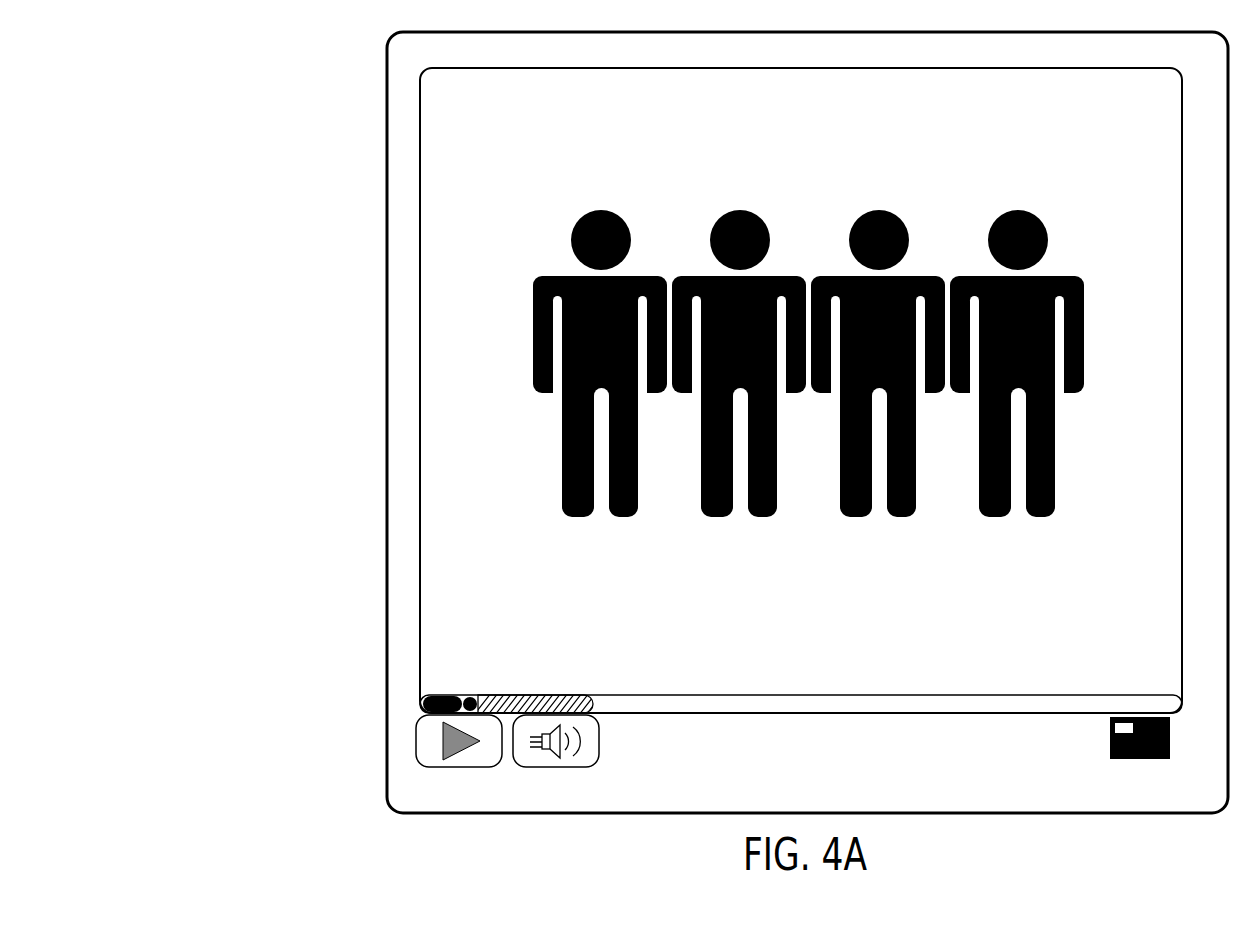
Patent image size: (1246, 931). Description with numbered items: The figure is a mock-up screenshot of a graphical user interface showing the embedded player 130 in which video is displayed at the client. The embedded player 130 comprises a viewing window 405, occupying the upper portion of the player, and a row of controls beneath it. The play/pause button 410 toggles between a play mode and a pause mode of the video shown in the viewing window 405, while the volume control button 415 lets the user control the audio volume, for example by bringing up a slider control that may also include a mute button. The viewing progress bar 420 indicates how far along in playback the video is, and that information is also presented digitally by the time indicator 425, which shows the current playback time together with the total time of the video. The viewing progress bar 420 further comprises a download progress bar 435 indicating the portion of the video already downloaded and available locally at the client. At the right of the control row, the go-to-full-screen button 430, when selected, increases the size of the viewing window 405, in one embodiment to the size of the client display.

The embedded player 130 is at (455, 63).
The viewing window 405 is at (500, 223).
The play/pause button 410 is at (445, 732).
The volume control button 415 is at (530, 757).
The viewing progress bar 420 is at (425, 697).
The time indicator 425 is at (658, 753).
The go-to-full-screen button 430 is at (1147, 760).
The download progress bar 435 is at (535, 695).